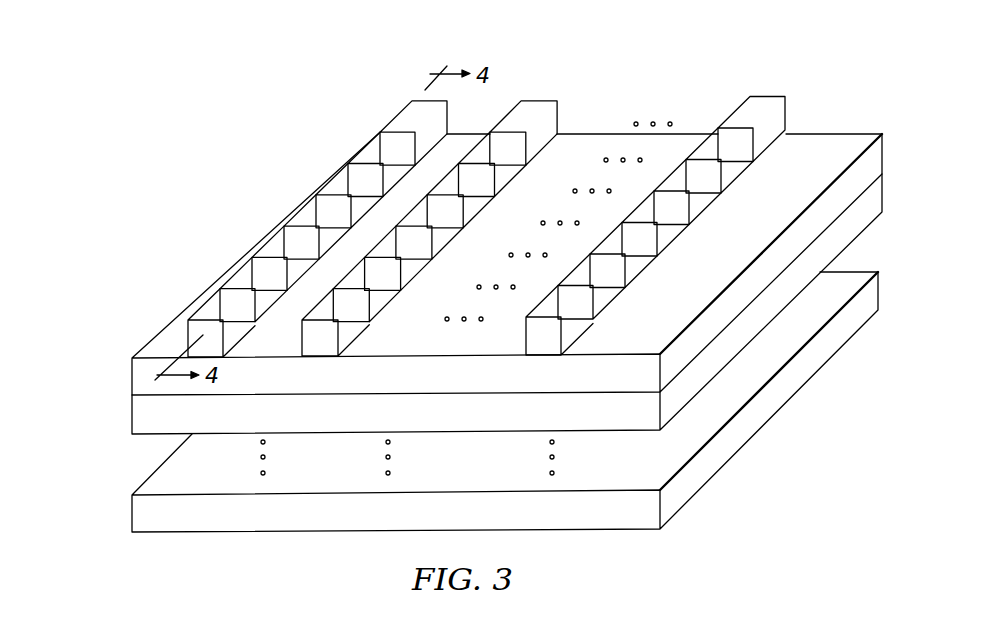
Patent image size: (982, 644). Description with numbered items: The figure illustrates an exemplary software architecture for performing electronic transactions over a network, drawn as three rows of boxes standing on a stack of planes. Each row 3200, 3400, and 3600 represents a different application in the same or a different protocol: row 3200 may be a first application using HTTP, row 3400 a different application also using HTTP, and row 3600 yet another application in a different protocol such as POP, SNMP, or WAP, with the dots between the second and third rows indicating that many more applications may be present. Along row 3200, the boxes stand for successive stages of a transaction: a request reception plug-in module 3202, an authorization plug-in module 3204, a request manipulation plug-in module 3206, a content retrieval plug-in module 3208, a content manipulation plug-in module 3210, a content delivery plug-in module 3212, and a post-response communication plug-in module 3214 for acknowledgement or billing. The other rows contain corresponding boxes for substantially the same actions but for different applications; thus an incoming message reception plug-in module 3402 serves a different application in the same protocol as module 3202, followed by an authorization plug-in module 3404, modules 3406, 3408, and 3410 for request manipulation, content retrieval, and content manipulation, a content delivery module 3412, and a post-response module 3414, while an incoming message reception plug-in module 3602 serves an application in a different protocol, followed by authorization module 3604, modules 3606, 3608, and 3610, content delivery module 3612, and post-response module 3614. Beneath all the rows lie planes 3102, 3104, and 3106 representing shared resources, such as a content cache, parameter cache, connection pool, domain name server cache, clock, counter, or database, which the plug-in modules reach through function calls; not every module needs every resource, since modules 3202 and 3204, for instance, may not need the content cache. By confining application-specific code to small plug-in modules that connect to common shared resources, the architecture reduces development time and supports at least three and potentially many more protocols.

The shared resource 3102 is at (132, 373).
The shared resource 3104 is at (132, 415).
The shared resource 3106 is at (132, 511).
The row 3200 is at (414, 90).
The request reception plug-in module 3202 is at (200, 305).
The authorization plug-in module 3204 is at (232, 273).
The request manipulation plug-in module 3206 is at (263, 241).
The content retrieval plug-in module 3208 is at (295, 209).
The content manipulation plug-in module 3210 is at (326, 178).
The content delivery plug-in module 3212 is at (358, 147).
The post-response communication plug-in module 3214 is at (391, 115).
The row 3400 is at (536, 90).
The incoming message reception plug-in module 3402 is at (364, 325).
The authorization plug-in module 3404 is at (392, 293).
The request manipulation plug-in module 3406 is at (424, 261).
The content retrieval plug-in module 3408 is at (455, 229).
The content manipulation plug-in module 3410 is at (485, 198).
The content delivery plug-in module 3412 is at (515, 166).
The post-response communication plug-in module 3414 is at (560, 117).
The row 3600 is at (767, 85).
The incoming message reception plug-in module 3602 is at (585, 323).
The authorization plug-in module 3604 is at (617, 291).
The request manipulation plug-in module 3606 is at (649, 260).
The content retrieval plug-in module 3608 is at (680, 230).
The content manipulation plug-in module 3610 is at (714, 198).
The content delivery plug-in module 3612 is at (745, 166).
The post-response communication plug-in module 3614 is at (787, 111).